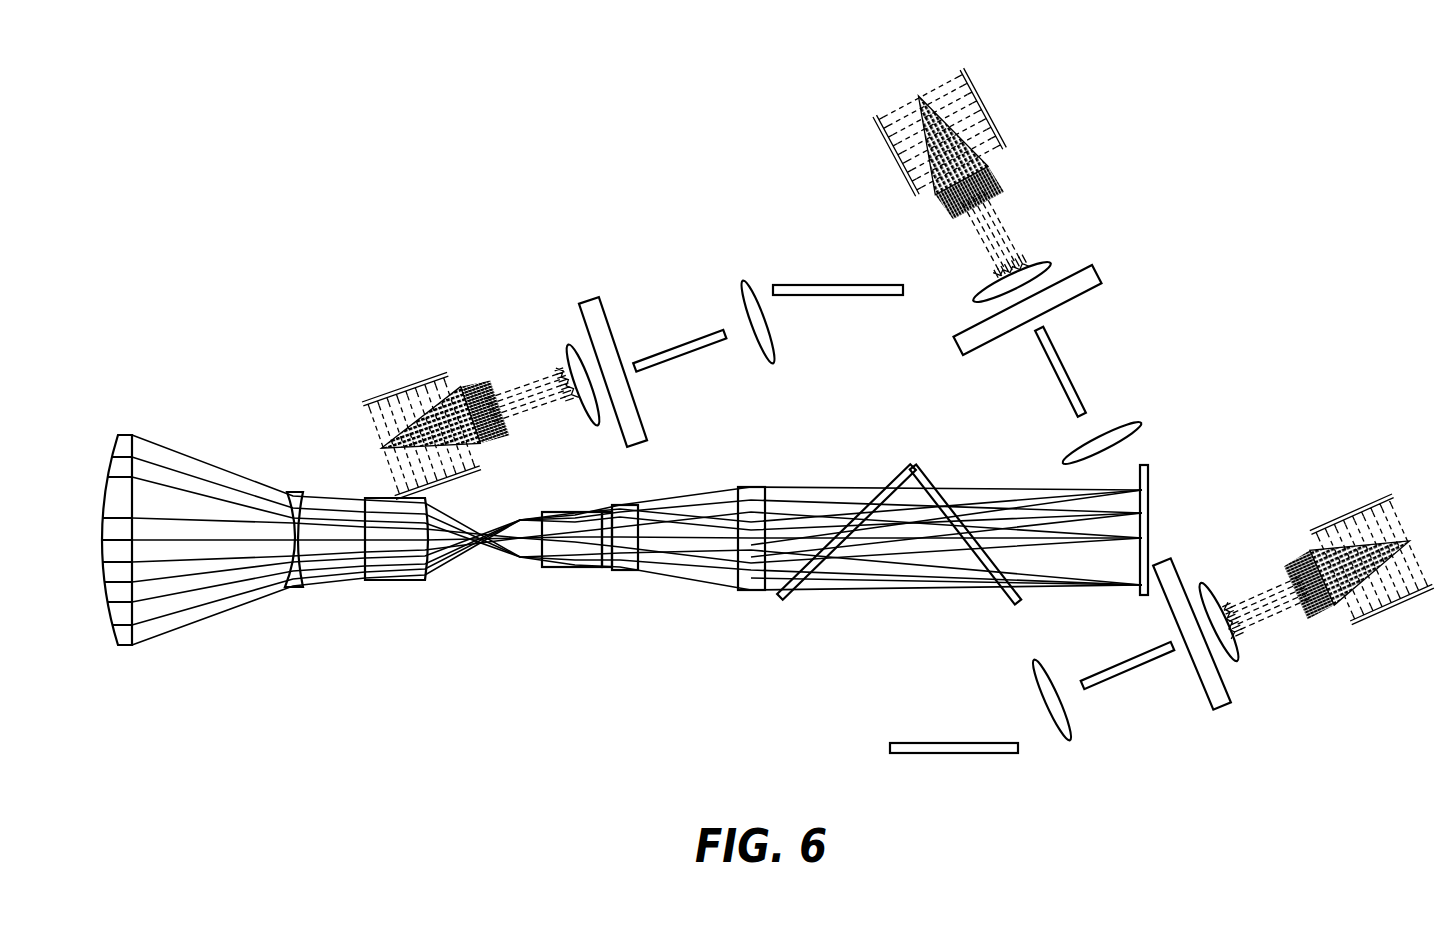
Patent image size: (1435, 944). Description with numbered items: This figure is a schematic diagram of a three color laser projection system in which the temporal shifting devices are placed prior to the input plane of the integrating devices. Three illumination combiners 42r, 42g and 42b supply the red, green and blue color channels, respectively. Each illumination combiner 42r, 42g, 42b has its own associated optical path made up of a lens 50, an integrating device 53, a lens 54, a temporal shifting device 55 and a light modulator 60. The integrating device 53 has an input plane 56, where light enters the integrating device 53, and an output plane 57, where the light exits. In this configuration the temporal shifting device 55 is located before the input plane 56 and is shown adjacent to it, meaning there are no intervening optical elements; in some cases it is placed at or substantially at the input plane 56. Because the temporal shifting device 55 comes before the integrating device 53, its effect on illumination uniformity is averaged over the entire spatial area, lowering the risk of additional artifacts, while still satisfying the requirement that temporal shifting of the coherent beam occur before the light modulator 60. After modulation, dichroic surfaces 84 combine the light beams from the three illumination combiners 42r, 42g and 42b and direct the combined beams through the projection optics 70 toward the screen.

The illumination combiner 42b is at (395, 373).
The illumination combiner 42g is at (895, 85).
The illumination combiner 42r is at (1352, 493).
The lens 50 is at (570, 345).
The integrating device 53 is at (677, 345).
The lens 54 is at (748, 283).
The temporal shifting device 55 is at (592, 303).
The input plane 56 is at (632, 362).
The output plane 57 is at (721, 337).
The light modulator 60 is at (839, 287).
The projection optics 70 is at (525, 568).
The dichroic surfaces 84 is at (905, 460).